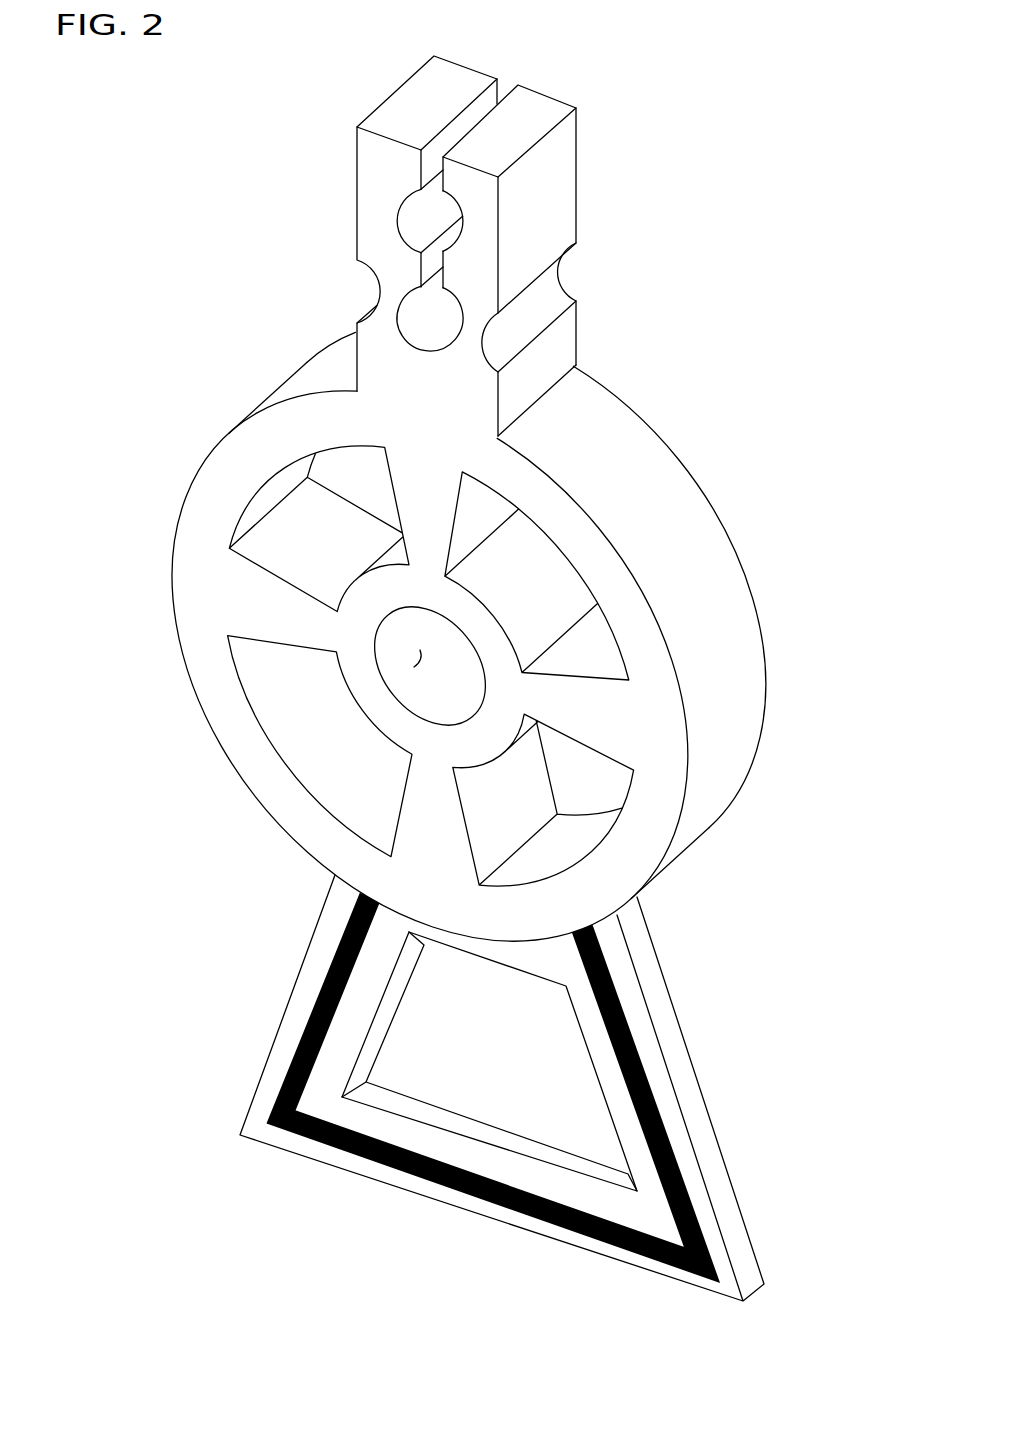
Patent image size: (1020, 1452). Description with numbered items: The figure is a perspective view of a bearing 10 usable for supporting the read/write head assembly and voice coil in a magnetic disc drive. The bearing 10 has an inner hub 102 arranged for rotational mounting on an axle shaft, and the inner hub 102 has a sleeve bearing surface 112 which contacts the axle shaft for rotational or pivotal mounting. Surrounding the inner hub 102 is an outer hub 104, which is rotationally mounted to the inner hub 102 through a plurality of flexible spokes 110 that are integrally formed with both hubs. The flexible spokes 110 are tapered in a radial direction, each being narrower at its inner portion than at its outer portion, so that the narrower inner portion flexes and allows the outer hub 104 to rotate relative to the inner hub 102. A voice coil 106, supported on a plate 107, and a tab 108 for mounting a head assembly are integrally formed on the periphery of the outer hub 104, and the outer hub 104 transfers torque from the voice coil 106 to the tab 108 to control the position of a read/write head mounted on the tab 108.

The bearing 10 is at (642, 170).
The inner hub 102 is at (362, 634).
The outer hub 104 is at (218, 480).
The voice coil 106 is at (324, 980).
The plate 107 is at (263, 1077).
The tab 108 is at (367, 188).
The flexible spokes 110 is at (247, 617).
The sleeve bearing surface 112 is at (414, 666).